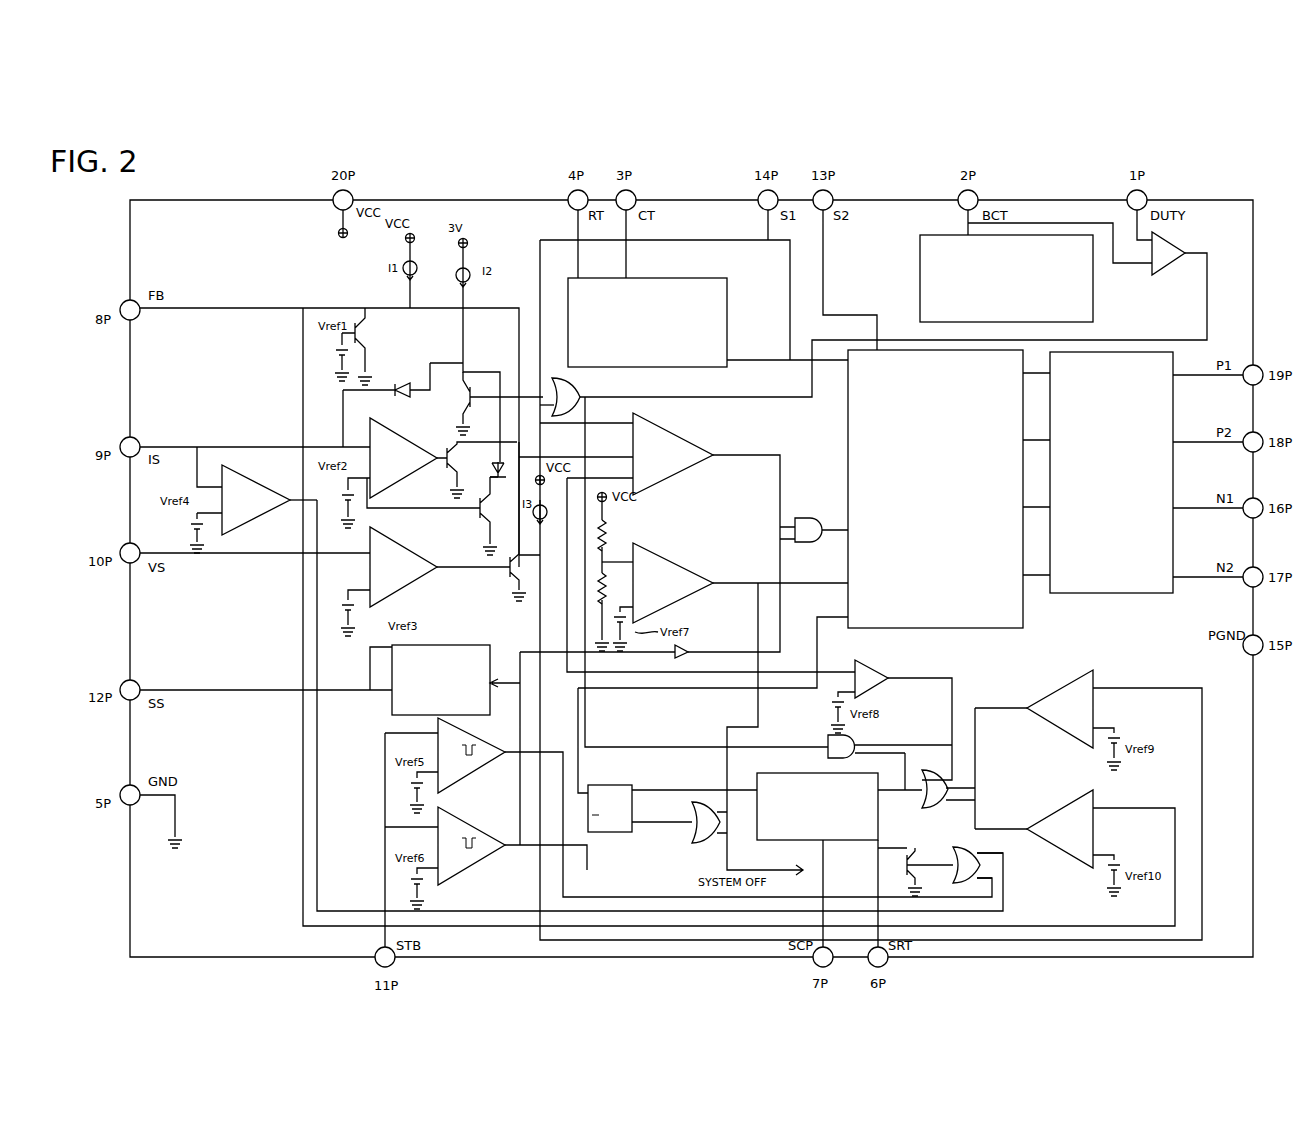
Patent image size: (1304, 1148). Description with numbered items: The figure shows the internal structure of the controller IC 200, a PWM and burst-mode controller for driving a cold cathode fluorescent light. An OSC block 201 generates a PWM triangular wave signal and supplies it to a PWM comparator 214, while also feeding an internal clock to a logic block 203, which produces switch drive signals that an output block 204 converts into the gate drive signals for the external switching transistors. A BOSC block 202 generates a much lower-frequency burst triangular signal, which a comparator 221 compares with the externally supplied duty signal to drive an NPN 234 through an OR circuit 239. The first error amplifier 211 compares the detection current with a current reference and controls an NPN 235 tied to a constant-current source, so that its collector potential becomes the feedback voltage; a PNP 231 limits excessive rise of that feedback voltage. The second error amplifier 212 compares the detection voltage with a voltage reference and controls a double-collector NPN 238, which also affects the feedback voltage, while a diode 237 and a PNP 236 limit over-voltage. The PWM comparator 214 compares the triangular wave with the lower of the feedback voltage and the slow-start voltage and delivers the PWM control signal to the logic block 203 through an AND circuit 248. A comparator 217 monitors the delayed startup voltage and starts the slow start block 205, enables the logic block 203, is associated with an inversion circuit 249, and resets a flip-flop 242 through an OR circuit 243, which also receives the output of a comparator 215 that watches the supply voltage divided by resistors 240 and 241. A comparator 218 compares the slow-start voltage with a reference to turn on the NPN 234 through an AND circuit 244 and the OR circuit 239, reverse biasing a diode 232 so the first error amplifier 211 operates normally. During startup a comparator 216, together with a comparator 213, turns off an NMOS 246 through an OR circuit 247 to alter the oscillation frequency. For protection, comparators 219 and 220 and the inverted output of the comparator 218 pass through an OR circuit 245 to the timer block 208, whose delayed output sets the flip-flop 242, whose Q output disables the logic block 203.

The controller IC 200 is at (205, 200).
The OSC block 201 is at (666, 278).
The BOSC block 202 is at (1093, 296).
The logic block 203 is at (975, 630).
The output block 204 is at (1115, 595).
The slow start block 205 is at (392, 702).
The TIMER block 208 is at (795, 842).
The first error amplifier 211 is at (390, 426).
The second error amplifier 212 is at (390, 538).
The comparator 213 is at (260, 486).
The PWM comparator 214 is at (680, 432).
The comparator 215 is at (675, 562).
The comparator 216 is at (478, 776).
The comparator 217 is at (486, 866).
The comparator 218 is at (878, 666).
The comparator 219 is at (1068, 678).
The comparator 220 is at (1060, 802).
The comparator 221 is at (1174, 270).
The PNP transistor 231 is at (368, 330).
The diode 232 is at (376, 382).
The NPN transistor 234 is at (489, 403).
The NPN transistor 235 is at (470, 470).
The PNP transistor 236 is at (474, 516).
The diode 237 is at (508, 456).
The double-collector type NPN transistor 238 is at (481, 521).
The OR circuit 239 is at (582, 404).
The resistor 240 is at (616, 535).
The resistor 241 is at (616, 588).
The flip-flop circuit 242 is at (620, 785).
The OR circuit 243 is at (692, 840).
The AND circuit 244 is at (822, 744).
The OR circuit 245 is at (930, 778).
The NMOS transistor 246 is at (906, 850).
The OR circuit 247 is at (960, 850).
The AND circuit 248 is at (808, 517).
The inversion circuit 249 is at (690, 656).